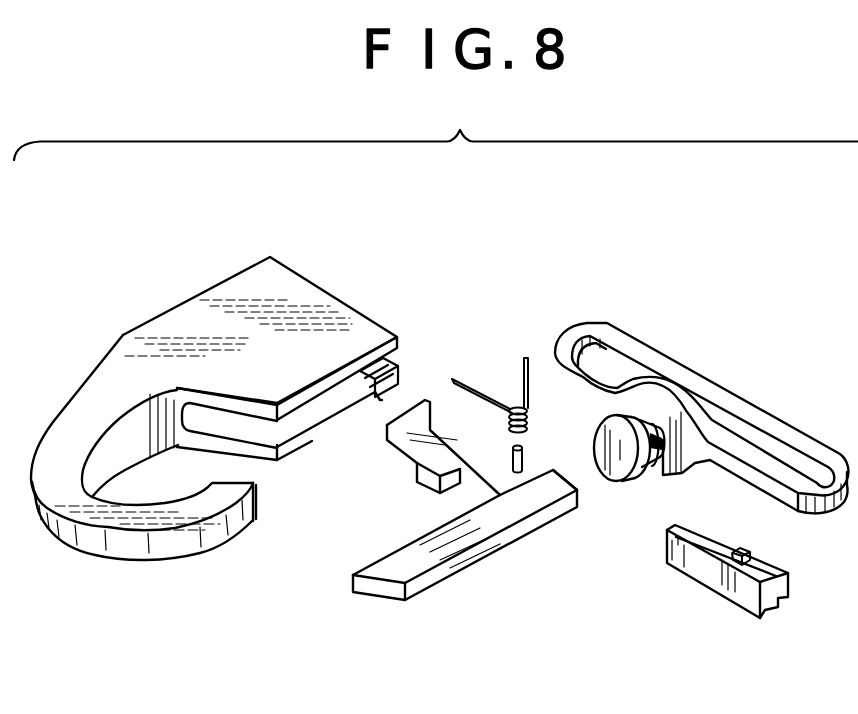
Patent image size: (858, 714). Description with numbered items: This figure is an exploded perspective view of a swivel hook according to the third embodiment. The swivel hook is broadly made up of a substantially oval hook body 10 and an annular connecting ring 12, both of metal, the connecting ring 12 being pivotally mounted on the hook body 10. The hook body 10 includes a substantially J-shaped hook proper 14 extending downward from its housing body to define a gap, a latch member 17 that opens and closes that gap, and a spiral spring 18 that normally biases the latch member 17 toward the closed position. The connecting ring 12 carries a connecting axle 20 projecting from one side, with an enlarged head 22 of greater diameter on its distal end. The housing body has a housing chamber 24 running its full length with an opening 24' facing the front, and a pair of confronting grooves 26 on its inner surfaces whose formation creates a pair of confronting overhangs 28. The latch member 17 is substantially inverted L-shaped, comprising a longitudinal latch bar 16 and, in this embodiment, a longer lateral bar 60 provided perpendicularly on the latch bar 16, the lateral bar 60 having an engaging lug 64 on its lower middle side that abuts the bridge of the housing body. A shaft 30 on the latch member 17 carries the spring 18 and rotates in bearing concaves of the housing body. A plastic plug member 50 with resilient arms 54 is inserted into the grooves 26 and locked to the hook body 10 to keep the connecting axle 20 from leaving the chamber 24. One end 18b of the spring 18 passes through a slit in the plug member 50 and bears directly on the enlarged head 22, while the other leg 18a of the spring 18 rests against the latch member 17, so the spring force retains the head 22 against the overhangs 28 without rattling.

The hook body 10 is at (212, 283).
The connecting ring 12 is at (680, 338).
The hook proper 14 is at (157, 532).
The latch bar 16 is at (445, 570).
The latch member 17 is at (550, 522).
The spiral spring 18 is at (516, 409).
The spring leg 18a is at (453, 377).
The end of the spring 18b is at (527, 358).
The connecting axle 20 is at (657, 447).
The enlarged head 22 is at (612, 460).
The housing chamber 24 is at (256, 454).
The opening 24' is at (310, 475).
The grooves 26 is at (383, 398).
The overhangs 28 is at (393, 372).
The shaft 30 is at (523, 454).
The plug member 50 is at (774, 594).
The resilient arms 54 is at (750, 552).
The lateral bar 60 is at (399, 437).
The engaging lug 64 is at (430, 479).